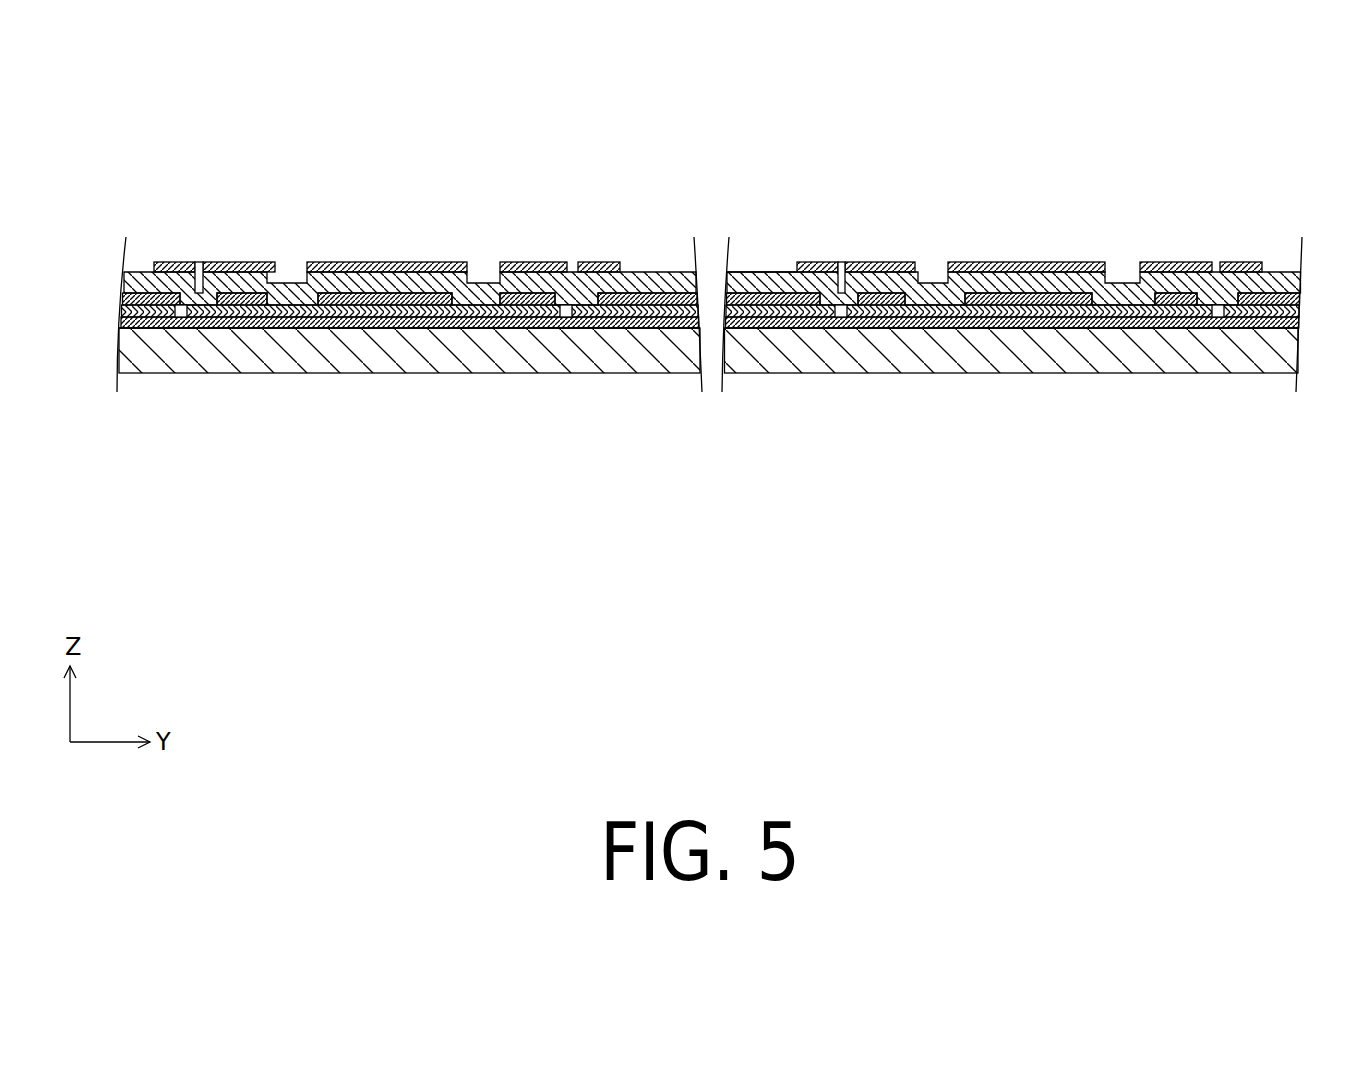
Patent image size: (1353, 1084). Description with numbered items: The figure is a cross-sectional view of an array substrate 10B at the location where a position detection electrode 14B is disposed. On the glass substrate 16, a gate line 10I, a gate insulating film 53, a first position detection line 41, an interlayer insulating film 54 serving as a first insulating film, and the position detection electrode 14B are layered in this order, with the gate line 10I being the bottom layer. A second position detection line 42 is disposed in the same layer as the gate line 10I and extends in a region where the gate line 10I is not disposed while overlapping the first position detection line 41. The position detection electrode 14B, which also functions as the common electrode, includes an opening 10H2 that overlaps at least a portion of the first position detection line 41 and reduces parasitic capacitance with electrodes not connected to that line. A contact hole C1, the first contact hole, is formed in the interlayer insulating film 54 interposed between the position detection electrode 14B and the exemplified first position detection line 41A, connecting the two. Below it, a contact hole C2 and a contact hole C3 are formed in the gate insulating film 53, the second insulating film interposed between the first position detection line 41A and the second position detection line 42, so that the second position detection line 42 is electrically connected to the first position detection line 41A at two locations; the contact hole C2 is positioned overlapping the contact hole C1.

The array substrate 10B is at (1291, 196).
The opening 10H2 is at (795, 268).
The gate line 10I is at (381, 327).
The position detection electrode 14B is at (375, 265).
The glass substrate 16 is at (456, 368).
The first position detection line 41A is at (711, 244).
The first position detection line 41 is at (641, 294).
The second position detection line 42 is at (148, 325).
The gate insulating film 53 is at (290, 318).
The interlayer insulating film 54 is at (436, 280).
The contact hole C1 is at (199, 290).
The contact hole C2 is at (176, 317).
The contact hole C3 is at (568, 313).